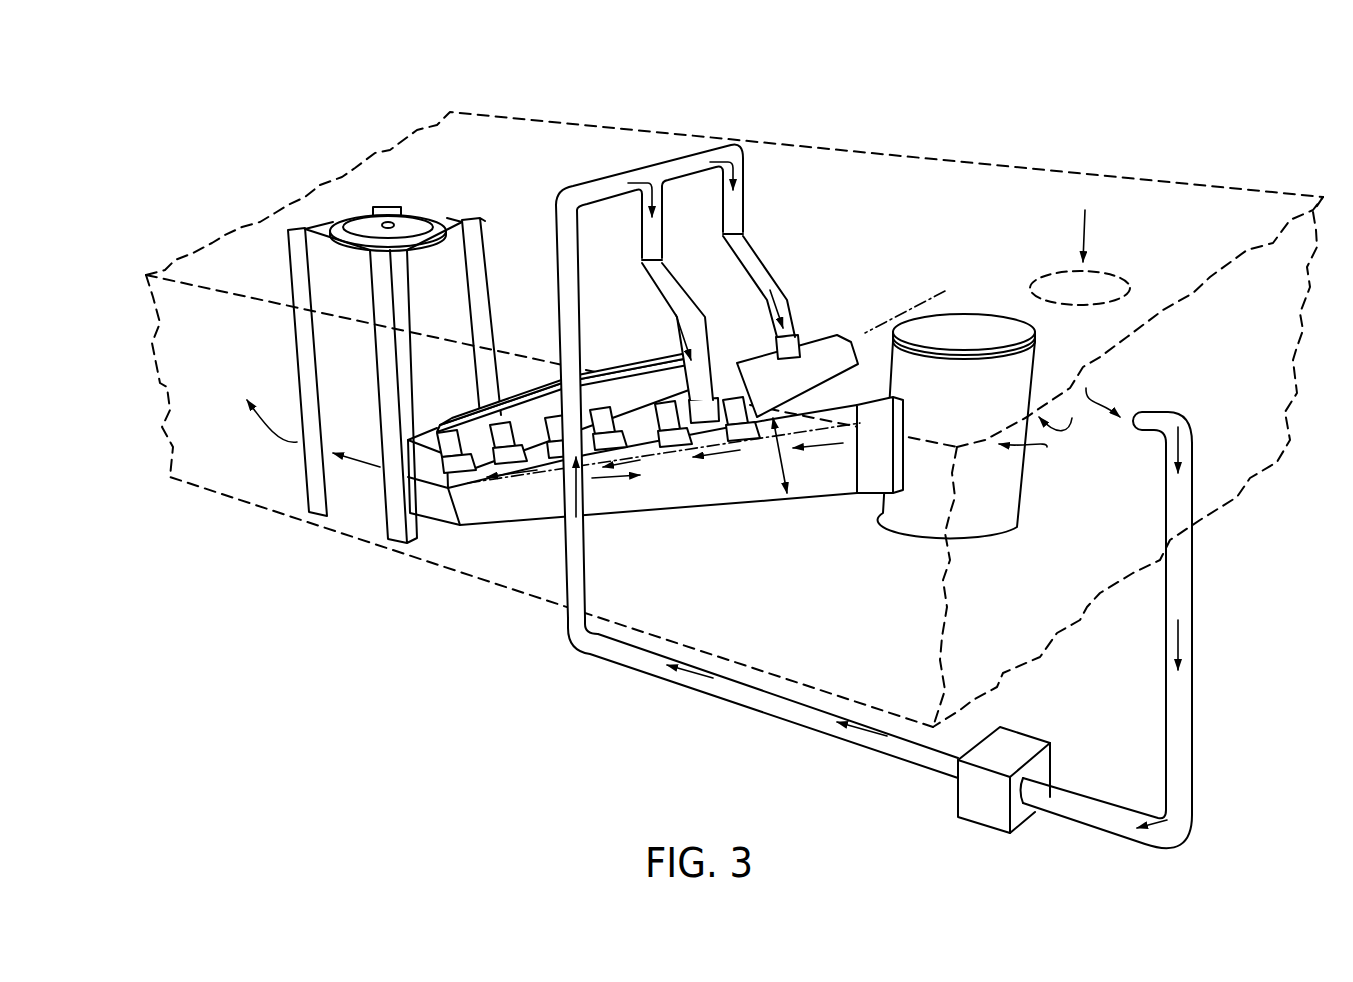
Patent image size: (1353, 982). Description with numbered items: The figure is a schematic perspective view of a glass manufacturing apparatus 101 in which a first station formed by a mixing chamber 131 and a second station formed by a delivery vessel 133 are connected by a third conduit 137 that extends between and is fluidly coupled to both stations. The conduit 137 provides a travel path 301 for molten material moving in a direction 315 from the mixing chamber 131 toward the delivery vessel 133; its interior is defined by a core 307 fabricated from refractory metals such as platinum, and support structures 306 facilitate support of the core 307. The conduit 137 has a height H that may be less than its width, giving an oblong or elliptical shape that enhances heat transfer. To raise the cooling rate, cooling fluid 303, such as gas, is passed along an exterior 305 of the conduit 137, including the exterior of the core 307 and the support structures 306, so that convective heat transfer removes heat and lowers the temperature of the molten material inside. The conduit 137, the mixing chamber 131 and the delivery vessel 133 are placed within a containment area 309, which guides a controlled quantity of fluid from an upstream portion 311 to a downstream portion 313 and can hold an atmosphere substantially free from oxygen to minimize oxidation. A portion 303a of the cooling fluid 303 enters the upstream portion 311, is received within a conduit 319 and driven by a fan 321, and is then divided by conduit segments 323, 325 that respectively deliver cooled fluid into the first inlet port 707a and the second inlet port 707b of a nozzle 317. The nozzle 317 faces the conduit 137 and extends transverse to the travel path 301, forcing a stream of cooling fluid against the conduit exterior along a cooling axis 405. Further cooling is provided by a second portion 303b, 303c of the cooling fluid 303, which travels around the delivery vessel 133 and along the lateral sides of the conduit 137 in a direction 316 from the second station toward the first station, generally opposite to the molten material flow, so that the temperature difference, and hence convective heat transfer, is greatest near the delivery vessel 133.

The glass manufacturing apparatus 101 is at (1062, 153).
The mixing chamber 131 is at (353, 503).
The delivery vessel 133 is at (982, 550).
The third conduit 137 is at (703, 520).
The travel path 301 is at (680, 467).
The cooling fluid 303 is at (1083, 228).
The portion of the cooling fluid 303a is at (1135, 390).
The second portion of the cooling fluid 303b is at (1047, 447).
The second portion of the cooling fluid 303c is at (1072, 418).
The exterior of the conduit 305 is at (827, 483).
The support structures 306 is at (762, 352).
The core 307 is at (533, 522).
The containment area 309 is at (477, 580).
The upstream portion 311 is at (1117, 275).
The downstream portion 313 is at (168, 410).
The direction 315 is at (618, 477).
The direction 316 is at (820, 443).
The nozzle 317 is at (745, 378).
The conduit 319 is at (1193, 607).
The fan 321 is at (980, 828).
The conduit segment 323 is at (661, 224).
The conduit segment 325 is at (745, 203).
The cooling axis 405 is at (947, 291).
The first inlet port 707a is at (693, 398).
The second inlet port 707b is at (800, 335).
The height H is at (773, 478).